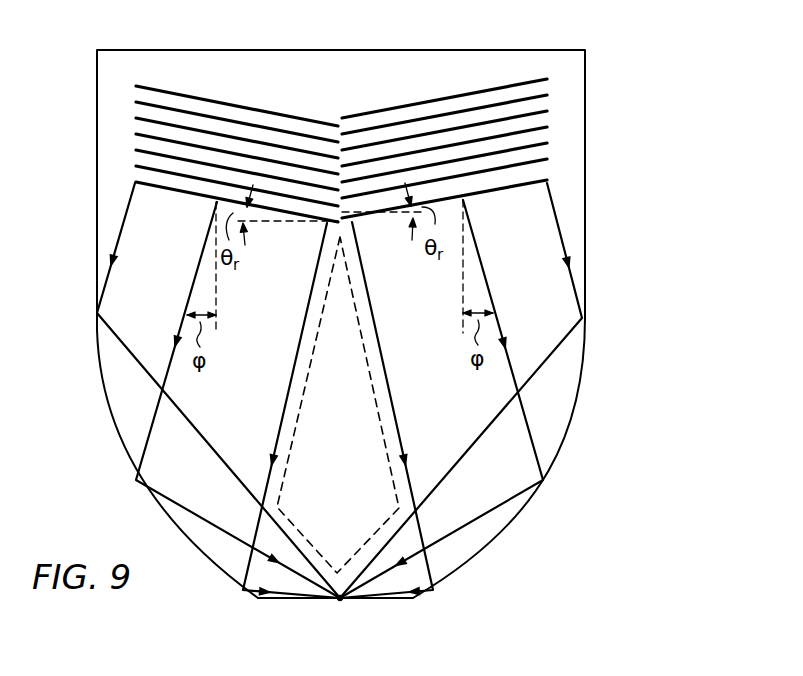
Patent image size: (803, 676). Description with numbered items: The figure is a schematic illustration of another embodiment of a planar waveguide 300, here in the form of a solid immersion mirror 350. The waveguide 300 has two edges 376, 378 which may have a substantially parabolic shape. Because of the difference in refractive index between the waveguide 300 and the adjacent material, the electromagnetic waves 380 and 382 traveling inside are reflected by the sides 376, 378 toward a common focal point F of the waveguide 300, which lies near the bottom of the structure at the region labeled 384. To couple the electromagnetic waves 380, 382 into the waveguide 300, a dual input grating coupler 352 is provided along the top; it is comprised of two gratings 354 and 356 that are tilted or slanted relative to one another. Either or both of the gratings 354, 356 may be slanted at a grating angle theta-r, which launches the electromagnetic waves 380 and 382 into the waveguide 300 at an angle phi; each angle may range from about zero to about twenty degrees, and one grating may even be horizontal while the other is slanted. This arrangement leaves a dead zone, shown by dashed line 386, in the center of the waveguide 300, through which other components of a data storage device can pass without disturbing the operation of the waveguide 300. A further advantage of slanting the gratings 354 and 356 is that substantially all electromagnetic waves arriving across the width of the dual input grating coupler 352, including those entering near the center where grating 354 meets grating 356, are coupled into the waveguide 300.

The planar waveguide 300 is at (672, 238).
The solid immersion mirror 350 is at (103, 417).
The dual input grating coupler 352 is at (547, 68).
The grating 354 is at (138, 150).
The grating 356 is at (548, 108).
The edge 376 is at (113, 376).
The edge 378 is at (563, 390).
The electromagnetic waves 380 is at (313, 283).
The electromagnetic waves 382 is at (362, 255).
The bottom surface 384 is at (280, 603).
The dead zone 386 is at (380, 402).
The focal point F is at (339, 606).